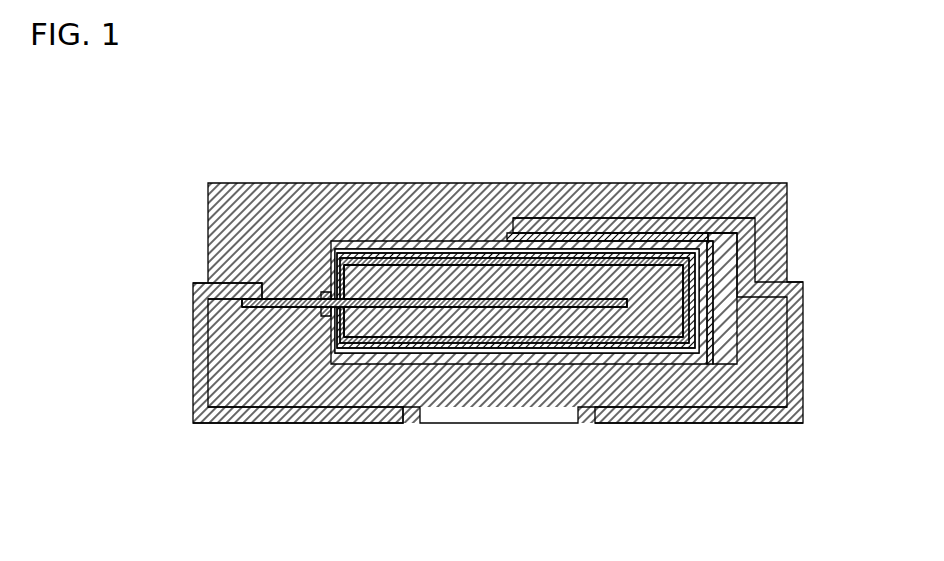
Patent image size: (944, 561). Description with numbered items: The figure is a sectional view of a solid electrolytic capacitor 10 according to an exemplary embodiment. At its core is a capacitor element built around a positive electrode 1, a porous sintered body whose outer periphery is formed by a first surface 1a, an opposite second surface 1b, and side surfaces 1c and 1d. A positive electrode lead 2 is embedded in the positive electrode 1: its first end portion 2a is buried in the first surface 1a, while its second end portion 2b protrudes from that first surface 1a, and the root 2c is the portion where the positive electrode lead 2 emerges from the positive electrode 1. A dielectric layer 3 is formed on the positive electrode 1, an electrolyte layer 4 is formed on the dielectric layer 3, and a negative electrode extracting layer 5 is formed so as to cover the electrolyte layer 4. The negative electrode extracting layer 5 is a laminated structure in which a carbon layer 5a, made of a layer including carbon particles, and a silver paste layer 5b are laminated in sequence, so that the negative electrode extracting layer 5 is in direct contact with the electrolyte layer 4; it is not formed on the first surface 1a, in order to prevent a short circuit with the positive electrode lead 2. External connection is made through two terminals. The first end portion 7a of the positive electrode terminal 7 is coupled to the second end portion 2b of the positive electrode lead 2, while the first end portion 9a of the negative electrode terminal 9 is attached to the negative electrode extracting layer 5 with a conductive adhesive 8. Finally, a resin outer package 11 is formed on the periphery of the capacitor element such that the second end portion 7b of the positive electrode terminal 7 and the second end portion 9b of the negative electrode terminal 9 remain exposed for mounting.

The positive electrode 1 is at (490, 280).
The first surface 1a is at (356, 322).
The second surface 1b is at (668, 312).
The side surface 1c is at (583, 244).
The side surface 1d is at (593, 325).
The positive electrode lead 2 is at (453, 300).
The first end portion 2a is at (528, 312).
The second end portion 2b is at (270, 298).
The root 2c is at (330, 318).
The dielectric layer 3 is at (407, 267).
The electrolyte layer 4 is at (383, 258).
The negative electrode extracting layer 5 is at (291, 110).
The carbon layer 5a is at (362, 252).
The silver paste layer 5b is at (337, 243).
The positive electrode terminal 7 is at (200, 318).
The first end portion 7a is at (236, 279).
The second end portion 7b is at (377, 421).
The conductive adhesive 8 is at (522, 238).
The negative electrode terminal 9 is at (806, 300).
The first end portion 9a is at (640, 227).
The second end portion 9b is at (745, 422).
The solid electrolytic capacitor 10 is at (756, 146).
The resin outer package 11 is at (222, 205).